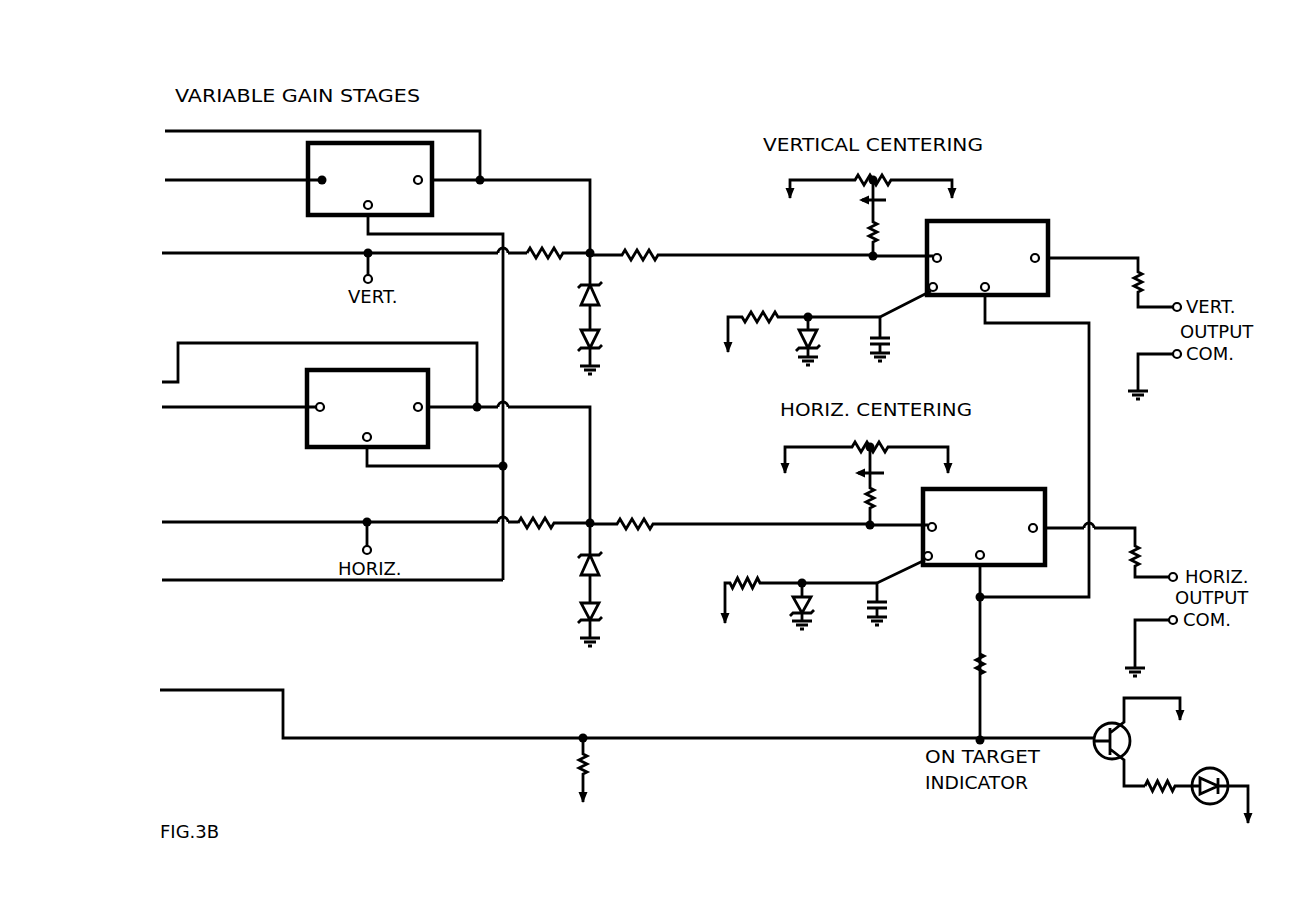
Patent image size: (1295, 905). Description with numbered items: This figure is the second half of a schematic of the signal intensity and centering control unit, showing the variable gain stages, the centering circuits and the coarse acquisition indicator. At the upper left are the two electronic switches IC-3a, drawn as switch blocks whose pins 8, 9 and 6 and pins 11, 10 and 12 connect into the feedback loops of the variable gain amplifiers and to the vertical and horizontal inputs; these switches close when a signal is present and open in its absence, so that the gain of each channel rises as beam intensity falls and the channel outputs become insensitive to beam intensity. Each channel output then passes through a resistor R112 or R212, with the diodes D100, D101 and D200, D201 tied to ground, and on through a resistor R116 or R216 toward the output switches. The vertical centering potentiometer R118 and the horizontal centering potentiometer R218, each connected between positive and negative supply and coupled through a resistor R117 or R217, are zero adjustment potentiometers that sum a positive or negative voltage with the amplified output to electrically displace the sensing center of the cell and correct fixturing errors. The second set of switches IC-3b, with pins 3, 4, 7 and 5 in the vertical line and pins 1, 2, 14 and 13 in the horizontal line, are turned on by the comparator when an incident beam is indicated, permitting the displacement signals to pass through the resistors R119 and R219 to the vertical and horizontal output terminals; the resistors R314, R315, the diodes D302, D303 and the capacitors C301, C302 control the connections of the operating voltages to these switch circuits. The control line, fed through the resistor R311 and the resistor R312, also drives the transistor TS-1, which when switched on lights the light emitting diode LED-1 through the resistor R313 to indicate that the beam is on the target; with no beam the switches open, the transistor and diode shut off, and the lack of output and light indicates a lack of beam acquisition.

The electronic switches IC-3a is at (310, 163).
The second set of switches IC-3b is at (1030, 240).
The resistor R112 is at (555, 242).
The resistor R116 is at (731, 243).
The resistor R117 is at (874, 218).
The zero adjustment potentiometer R118 is at (866, 182).
The resistor R119 is at (1126, 284).
The resistor R212 is at (552, 509).
The resistor R216 is at (730, 510).
The resistor R217 is at (868, 486).
The zero adjustment potentiometer R218 is at (860, 448).
The resistor R219 is at (1121, 554).
The resistor R311 is at (556, 771).
The resistor R312 is at (951, 663).
The resistor R313 is at (1163, 798).
The resistor R314 is at (781, 591).
The resistor R315 is at (790, 323).
The diode D100 is at (560, 291).
The diode D101 is at (560, 352).
The diode D200 is at (558, 563).
The diode D201 is at (558, 624).
The diode D302 is at (826, 604).
The diode D303 is at (832, 339).
The capacitor C301 is at (906, 604).
The capacitor C302 is at (911, 339).
The transistor TS-1 is at (1141, 737).
The light emitting diode LED-1 is at (1231, 787).
The switch pin 1 is at (941, 526).
The switch pin 2 is at (1024, 527).
The switch pin 3 is at (945, 258).
The switch pin 4 is at (1025, 258).
The switch pin 5 is at (984, 277).
The switch pin 6 is at (367, 195).
The switch pin 7 is at (940, 285).
The switch pin 8 is at (330, 180).
The switch pin 9 is at (409, 180).
The switch pin 10 is at (406, 407).
The switch pin 11 is at (336, 407).
The switch pin 12 is at (367, 427).
The switch pin 13 is at (977, 543).
The switch pin 14 is at (940, 555).